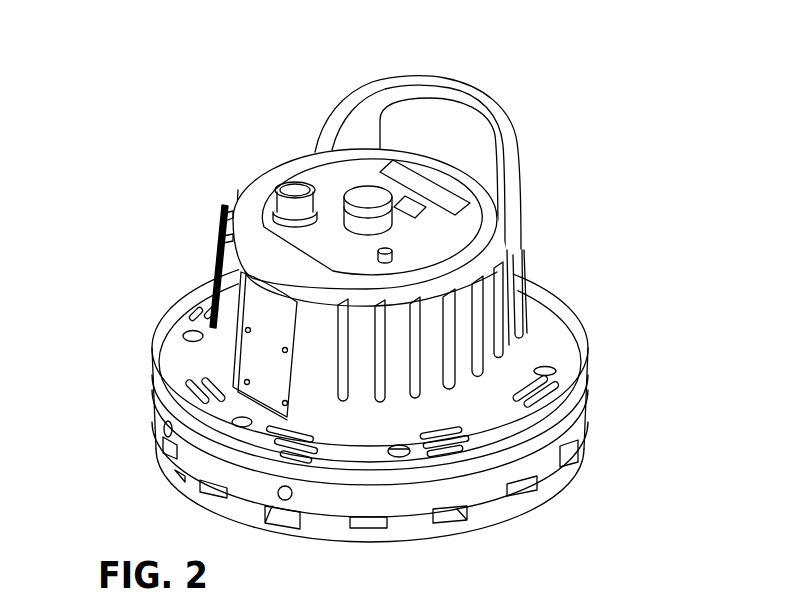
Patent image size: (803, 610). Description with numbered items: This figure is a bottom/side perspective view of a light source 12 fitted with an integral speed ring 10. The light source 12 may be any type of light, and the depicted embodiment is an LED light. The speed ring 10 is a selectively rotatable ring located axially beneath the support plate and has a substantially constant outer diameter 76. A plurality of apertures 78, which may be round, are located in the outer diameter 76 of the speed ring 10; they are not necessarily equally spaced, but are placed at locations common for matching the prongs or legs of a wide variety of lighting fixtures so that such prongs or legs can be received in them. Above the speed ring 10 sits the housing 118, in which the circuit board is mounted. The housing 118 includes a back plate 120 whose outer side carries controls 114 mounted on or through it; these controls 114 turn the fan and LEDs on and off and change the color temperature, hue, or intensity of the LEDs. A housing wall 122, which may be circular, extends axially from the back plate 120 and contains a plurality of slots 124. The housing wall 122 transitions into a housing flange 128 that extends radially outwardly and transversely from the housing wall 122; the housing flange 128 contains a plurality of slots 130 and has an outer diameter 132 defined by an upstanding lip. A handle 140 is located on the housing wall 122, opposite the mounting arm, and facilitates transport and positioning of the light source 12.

The speed ring 10 is at (375, 396).
The light source 12 is at (238, 205).
The outer diameter 76 is at (579, 421).
The apertures 78 is at (164, 430).
The controls 114 is at (346, 197).
The housing 118 is at (230, 314).
The back plate 120 is at (353, 170).
The housing wall 122 is at (520, 351).
The slots 124 is at (526, 336).
The housing flange 128 is at (567, 371).
The slots 130 is at (200, 381).
The outer diameter 132 is at (580, 313).
The handle 140 is at (498, 115).